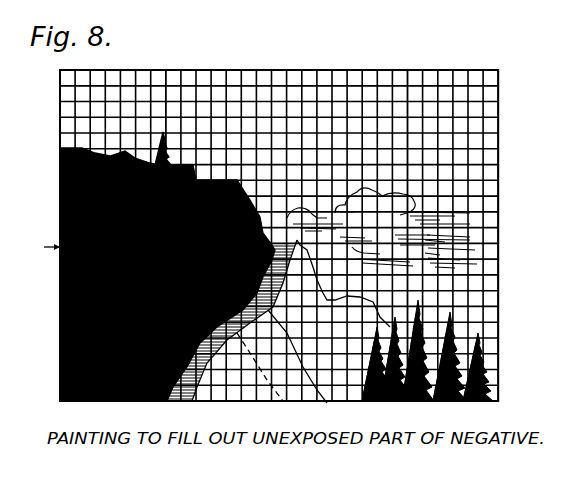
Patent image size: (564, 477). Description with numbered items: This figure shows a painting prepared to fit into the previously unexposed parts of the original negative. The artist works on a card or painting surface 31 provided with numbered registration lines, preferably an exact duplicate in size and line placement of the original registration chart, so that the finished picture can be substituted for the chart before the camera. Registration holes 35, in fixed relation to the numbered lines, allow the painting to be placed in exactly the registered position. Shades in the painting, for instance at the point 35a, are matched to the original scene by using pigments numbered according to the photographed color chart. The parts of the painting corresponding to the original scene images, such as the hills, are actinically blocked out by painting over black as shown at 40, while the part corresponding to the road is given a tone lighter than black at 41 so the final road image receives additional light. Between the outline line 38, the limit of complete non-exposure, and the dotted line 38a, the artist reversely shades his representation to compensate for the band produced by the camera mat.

The painting surface 31 is at (354, 66).
The registration holes 35 is at (152, 75).
The point of matched shade in the painting 35a is at (453, 333).
The outline line of complete non-exposure 38 is at (329, 330).
The dotted inner edge line of the shaded band 38a is at (274, 376).
The black blocked-out area 40 is at (60, 332).
The lighter-toned pigment area 41 is at (186, 401).